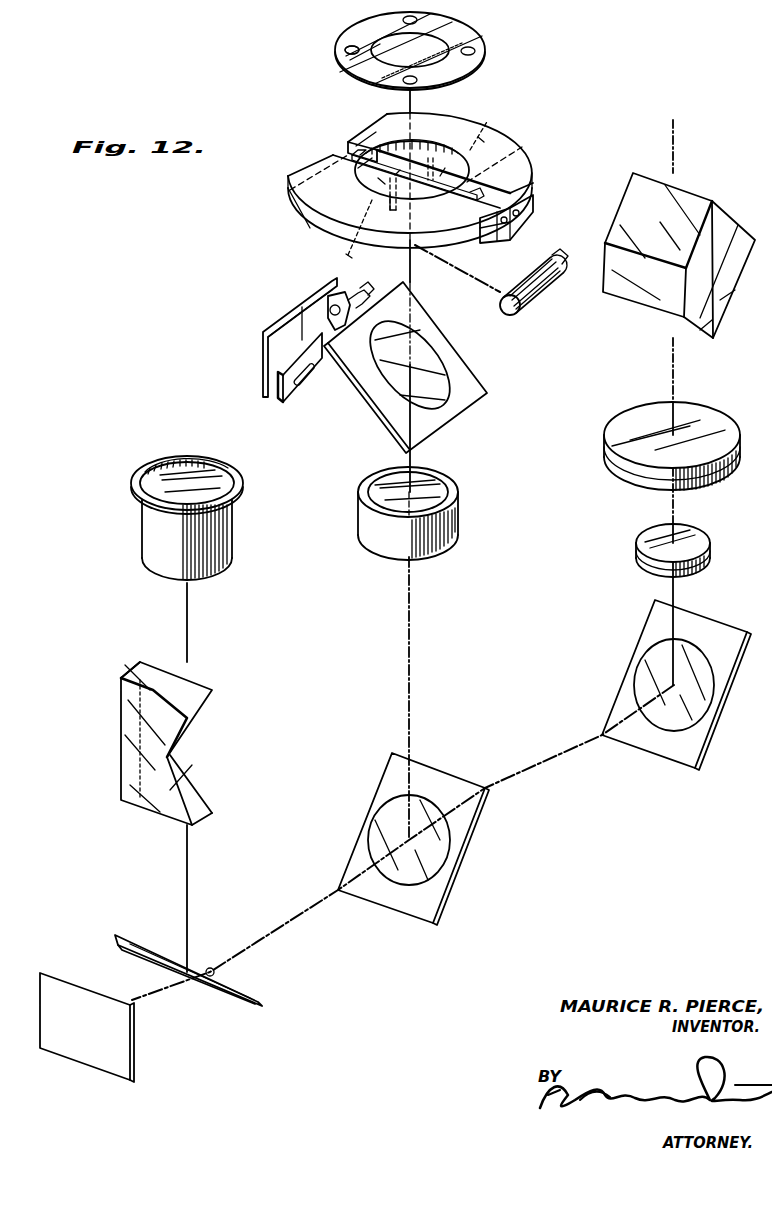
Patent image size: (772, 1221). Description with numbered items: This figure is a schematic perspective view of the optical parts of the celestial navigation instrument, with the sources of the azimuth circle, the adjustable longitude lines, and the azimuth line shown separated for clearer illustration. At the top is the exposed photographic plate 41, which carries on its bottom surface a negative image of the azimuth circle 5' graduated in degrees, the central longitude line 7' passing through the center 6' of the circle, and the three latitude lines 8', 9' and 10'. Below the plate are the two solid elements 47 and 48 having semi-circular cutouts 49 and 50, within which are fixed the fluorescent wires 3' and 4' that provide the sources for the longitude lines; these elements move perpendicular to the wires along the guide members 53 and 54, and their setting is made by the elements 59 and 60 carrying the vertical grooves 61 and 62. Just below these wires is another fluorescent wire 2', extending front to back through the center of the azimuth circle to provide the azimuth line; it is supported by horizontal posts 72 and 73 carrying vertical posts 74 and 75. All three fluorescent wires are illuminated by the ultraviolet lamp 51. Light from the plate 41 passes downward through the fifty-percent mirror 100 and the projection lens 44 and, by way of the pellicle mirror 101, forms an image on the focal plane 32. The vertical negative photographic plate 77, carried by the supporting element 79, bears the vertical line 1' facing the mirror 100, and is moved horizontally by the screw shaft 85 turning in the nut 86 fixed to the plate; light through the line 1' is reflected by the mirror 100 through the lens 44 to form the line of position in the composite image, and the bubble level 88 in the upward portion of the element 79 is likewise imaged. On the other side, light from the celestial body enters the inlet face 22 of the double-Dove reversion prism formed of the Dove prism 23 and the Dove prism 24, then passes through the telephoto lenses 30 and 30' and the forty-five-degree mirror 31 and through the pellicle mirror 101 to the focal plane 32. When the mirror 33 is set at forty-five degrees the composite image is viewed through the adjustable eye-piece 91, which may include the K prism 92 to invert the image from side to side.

The exposed photographic plate 41 is at (475, 42).
The central longitude line 7' is at (335, 41).
The latitude line 10' is at (329, 60).
The azimuth circle 5' is at (352, 70).
The latitude line 8' is at (383, 92).
The center of the azimuth circle 6' is at (406, 33).
The latitude line 9' is at (452, 77).
The solid element 47 is at (507, 137).
The solid element 48 is at (334, 218).
The guide member 53 is at (347, 152).
The guide member 54 is at (468, 200).
The semi-circular cutout 49 is at (430, 150).
The semi-circular cutout 50 is at (366, 190).
The vertical post 74 is at (396, 203).
The vertical post 75 is at (435, 182).
The fluorescent wire 2' is at (397, 165).
The fluorescent wire 4' is at (439, 164).
The fluorescent wire 3' is at (378, 184).
The horizontal post 73 is at (488, 128).
The horizontal post 72 is at (352, 252).
The element 60 is at (525, 202).
The vertical groove 61 is at (520, 215).
The vertical groove 62 is at (508, 224).
The element 59 is at (495, 238).
The ultraviolet lamp 51 is at (533, 290).
The vertical negative photographic plate 77 is at (282, 323).
The vertical line 1' is at (311, 291).
The supporting element 79 is at (286, 398).
The bubble level 88 is at (310, 384).
The nut 86 is at (356, 302).
The screw shaft 85 is at (368, 286).
The 45-degree mirror 100 is at (432, 356).
The projection lens 44 is at (442, 488).
The adjustable eye-piece 91 is at (228, 530).
The K prism 92 is at (205, 690).
The focal plane 32 is at (68, 974).
The mirror 33 is at (240, 992).
The pellicle mirror 101 is at (438, 848).
The inlet face 22 is at (730, 225).
The Dove prism 23 is at (728, 296).
The Dove prism 24 is at (715, 328).
The telephoto lens 30 is at (684, 441).
The telephoto lens 30' is at (703, 547).
The 45-degree mirror 31 is at (705, 690).